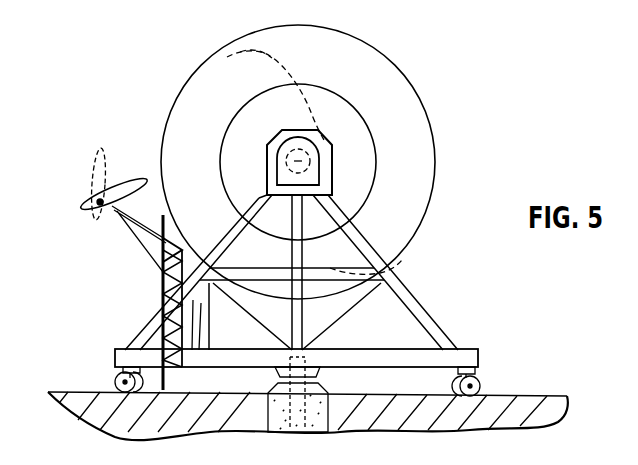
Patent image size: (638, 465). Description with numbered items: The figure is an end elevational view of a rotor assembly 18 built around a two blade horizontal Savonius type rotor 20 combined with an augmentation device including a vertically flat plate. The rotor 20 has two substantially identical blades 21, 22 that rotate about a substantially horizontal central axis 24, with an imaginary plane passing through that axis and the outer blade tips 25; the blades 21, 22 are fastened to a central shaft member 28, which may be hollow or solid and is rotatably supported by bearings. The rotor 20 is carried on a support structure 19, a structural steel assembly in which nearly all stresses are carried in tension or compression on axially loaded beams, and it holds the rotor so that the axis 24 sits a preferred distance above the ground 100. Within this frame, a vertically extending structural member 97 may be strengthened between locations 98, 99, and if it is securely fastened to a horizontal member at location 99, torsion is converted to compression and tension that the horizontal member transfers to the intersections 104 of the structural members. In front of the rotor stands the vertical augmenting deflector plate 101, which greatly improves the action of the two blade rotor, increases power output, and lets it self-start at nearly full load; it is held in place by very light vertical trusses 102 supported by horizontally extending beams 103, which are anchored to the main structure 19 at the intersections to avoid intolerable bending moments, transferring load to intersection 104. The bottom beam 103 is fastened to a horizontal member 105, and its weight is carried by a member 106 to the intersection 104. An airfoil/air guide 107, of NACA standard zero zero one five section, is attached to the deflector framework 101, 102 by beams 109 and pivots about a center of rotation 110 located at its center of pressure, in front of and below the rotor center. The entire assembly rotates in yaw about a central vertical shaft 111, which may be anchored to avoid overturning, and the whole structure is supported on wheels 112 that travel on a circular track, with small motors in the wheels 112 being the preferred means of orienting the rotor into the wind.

The rotor assembly 18 is at (453, 71).
The support structure 19 is at (430, 312).
The two blade Savonius type rotor 20 is at (398, 62).
The blade 21 is at (288, 70).
The blade 22 is at (392, 271).
The central axis 24 is at (279, 165).
The outer blade tip 25 is at (230, 56).
The central shaft member 28 is at (312, 163).
The vertically extending structural member 97 is at (304, 251).
The location 98 is at (308, 240).
The location 99 is at (291, 263).
The ground 100 is at (543, 404).
The vertical augmenting deflector plate 101 is at (162, 293).
The vertical truss 102 is at (170, 237).
The horizontally extending beam 103 is at (188, 268).
The intersection 104 is at (237, 201).
The horizontal member 105 is at (413, 367).
The member 106 is at (196, 326).
The airfoil/air guide 107 is at (130, 186).
The beam 109 is at (137, 236).
The center of rotation 110 is at (95, 212).
The central vertical shaft 111 is at (308, 378).
The wheel 112 is at (479, 384).